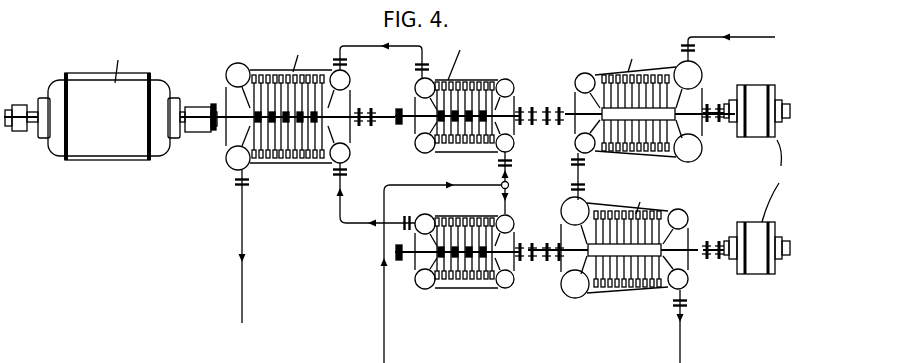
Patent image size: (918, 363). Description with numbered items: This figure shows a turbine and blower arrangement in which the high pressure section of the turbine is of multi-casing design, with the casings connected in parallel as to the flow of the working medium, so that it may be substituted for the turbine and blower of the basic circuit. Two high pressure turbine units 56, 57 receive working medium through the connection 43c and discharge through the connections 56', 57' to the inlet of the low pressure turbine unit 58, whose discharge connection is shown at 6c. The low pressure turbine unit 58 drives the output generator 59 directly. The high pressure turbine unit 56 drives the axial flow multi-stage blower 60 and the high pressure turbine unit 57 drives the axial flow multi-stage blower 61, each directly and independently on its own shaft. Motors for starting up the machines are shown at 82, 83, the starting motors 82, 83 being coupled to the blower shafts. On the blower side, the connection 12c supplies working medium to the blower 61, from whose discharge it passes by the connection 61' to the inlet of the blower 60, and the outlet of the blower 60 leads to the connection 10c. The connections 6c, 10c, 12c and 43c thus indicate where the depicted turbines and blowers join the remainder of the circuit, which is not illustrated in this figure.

The output generator 59 is at (115, 147).
The low pressure turbine unit 58 is at (300, 162).
The high pressure turbine unit 57 is at (479, 92).
The discharge connection of high pressure turbine 57 57' is at (381, 52).
The high pressure turbine unit 56 is at (477, 259).
The discharge connection of high pressure turbine 56 56' is at (374, 196).
The axial flow multi-stage blower 61 is at (650, 112).
The connection between blowers 61' is at (564, 176).
The axial flow multi-stage blower 60 is at (620, 290).
The starting motor 82 is at (757, 128).
The starting motor 83 is at (740, 232).
The connection 12c is at (735, 34).
The discharge connection 6c is at (243, 293).
The connection 43c is at (385, 323).
The connection 10c is at (684, 332).